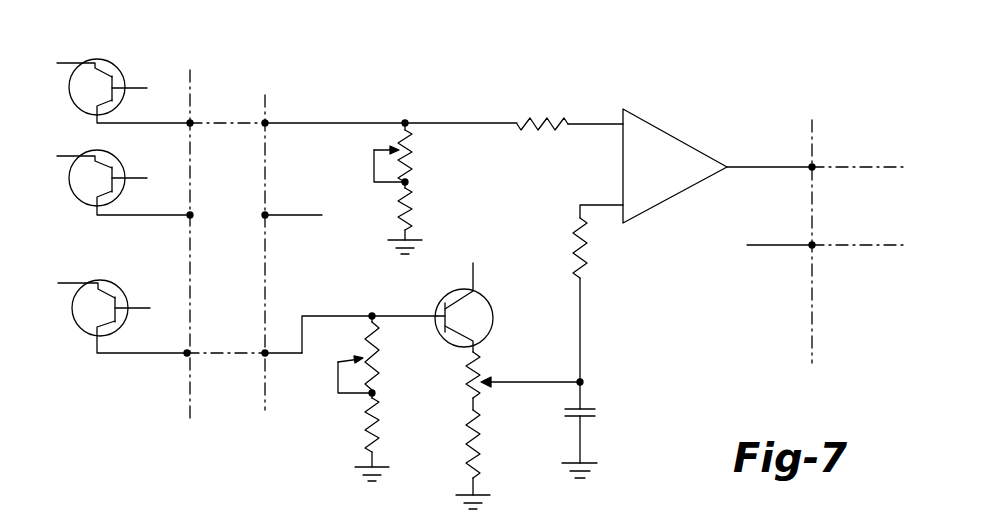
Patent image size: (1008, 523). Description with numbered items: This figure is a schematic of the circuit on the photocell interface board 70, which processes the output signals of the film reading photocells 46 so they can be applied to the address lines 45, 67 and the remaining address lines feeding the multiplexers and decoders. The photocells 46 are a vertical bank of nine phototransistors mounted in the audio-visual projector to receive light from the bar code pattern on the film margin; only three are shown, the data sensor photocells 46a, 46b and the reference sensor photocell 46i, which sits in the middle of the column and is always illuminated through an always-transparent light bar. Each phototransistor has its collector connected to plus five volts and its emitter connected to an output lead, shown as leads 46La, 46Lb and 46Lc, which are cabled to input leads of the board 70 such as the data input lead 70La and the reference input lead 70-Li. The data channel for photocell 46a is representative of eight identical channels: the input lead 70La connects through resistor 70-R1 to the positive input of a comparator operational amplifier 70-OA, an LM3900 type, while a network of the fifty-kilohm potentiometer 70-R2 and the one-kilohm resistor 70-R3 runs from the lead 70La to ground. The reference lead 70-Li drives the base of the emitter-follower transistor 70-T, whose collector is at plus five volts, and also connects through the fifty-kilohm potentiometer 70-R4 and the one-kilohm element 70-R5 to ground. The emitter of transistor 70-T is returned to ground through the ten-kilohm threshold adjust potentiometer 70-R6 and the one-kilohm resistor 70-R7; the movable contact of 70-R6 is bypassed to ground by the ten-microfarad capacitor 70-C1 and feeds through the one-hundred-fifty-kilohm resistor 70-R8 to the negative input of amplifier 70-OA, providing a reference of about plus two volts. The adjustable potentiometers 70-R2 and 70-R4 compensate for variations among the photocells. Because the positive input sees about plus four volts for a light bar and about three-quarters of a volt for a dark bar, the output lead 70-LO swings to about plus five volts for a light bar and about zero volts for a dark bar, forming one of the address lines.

The film reading photocells 46 is at (101, 44).
The data sensor photocell 46a is at (119, 71).
The data sensor photocell 46b is at (117, 165).
The reference sensor photocell 46i is at (92, 335).
The output lead 46La is at (178, 121).
The output lead 46Lb is at (172, 213).
The output lead 46Lc is at (170, 352).
The photocell interface board 70 is at (294, 409).
The input lead 70La is at (312, 121).
The reference circuit input lead 70-Li is at (338, 300).
The resistor 70-R1 is at (569, 122).
The 50K potentiometer 70-R2 is at (426, 154).
The 1K resistor 70-R3 is at (426, 218).
The 50K potentiometer 70-R4 is at (381, 356).
The 1K potentiometer 70-R5 is at (385, 435).
The 10K threshold adjust potentiometer 70-R6 is at (504, 374).
The 1K resistor 70-R7 is at (490, 453).
The 150K resistor 70-R8 is at (616, 293).
The transistor 70-T is at (478, 292).
The comparator operational amplifier 70-OA is at (680, 157).
The output lead 70-LO is at (771, 148).
The 10 μf capacitor 70-C1 is at (611, 428).
The address line 45 is at (845, 244).
The address line 67 is at (826, 245).